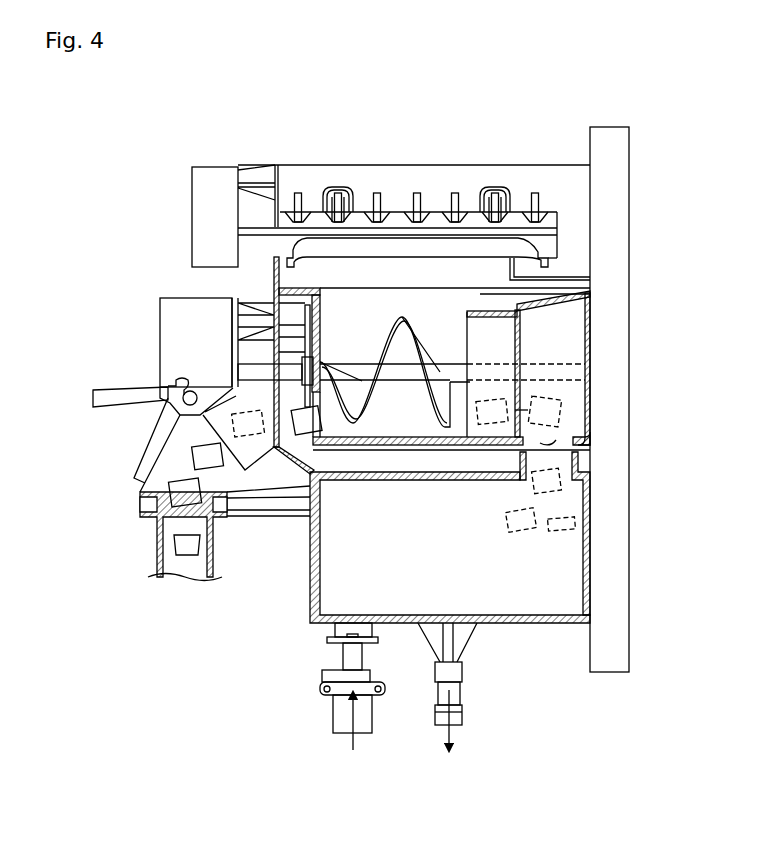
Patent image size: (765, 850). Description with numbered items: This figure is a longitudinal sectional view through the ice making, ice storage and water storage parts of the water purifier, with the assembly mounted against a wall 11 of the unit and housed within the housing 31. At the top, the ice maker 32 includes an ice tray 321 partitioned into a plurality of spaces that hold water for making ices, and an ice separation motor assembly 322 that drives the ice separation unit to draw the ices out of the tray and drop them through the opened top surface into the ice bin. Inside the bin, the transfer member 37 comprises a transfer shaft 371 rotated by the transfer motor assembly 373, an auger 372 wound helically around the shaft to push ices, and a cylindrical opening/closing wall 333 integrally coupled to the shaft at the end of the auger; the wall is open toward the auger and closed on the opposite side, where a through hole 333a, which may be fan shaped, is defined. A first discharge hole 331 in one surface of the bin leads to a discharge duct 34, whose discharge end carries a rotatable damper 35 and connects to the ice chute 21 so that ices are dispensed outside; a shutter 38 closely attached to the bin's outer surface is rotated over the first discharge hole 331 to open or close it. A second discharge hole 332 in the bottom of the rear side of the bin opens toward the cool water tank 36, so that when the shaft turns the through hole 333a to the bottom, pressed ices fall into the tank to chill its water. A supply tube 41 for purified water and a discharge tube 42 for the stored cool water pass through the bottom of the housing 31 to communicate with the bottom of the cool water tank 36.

The cabinet wall 11 is at (617, 203).
The ice chute 21 is at (158, 555).
The housing 31 is at (556, 628).
The ice maker 32 is at (391, 168).
The ice tray 321 is at (313, 215).
The ice separation motor assembly 322 is at (213, 175).
The first discharge hole 331 is at (318, 415).
The second discharge hole 332 is at (552, 443).
The opening/closing wall 333 is at (520, 332).
The through hole 333a is at (533, 405).
The discharge duct 34 is at (223, 425).
The damper 35 is at (148, 462).
The cool water tank 36 is at (508, 603).
The transfer member 37 is at (195, 352).
The transfer shaft 371 is at (248, 368).
The auger 372 is at (348, 396).
The transfer motor assembly 373 is at (172, 330).
The shutter 38 is at (302, 320).
The supply tube 41 is at (340, 718).
The discharge tube 42 is at (455, 718).